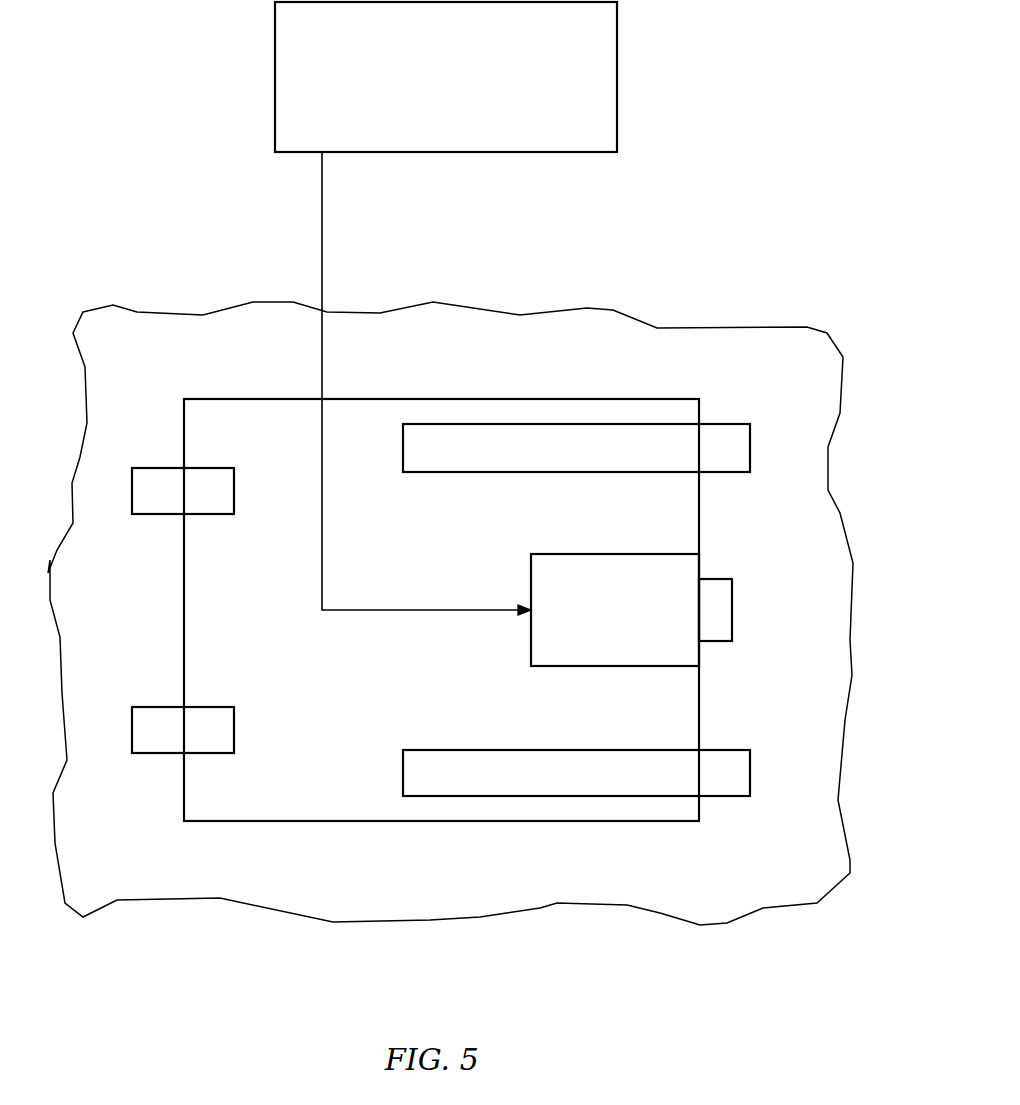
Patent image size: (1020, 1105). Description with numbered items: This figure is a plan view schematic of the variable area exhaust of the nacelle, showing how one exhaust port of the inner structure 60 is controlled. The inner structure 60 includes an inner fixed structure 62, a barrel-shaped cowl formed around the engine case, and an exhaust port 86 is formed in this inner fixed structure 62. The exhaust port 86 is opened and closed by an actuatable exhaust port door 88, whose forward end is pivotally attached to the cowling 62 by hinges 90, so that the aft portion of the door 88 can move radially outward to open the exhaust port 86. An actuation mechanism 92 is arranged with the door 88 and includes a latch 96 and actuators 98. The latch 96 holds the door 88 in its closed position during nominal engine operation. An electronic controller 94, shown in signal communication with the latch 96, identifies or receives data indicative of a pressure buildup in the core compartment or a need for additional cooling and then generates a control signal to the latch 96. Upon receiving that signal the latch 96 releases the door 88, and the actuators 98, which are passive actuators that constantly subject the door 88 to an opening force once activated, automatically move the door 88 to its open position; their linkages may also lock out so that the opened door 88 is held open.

The inner structure 60 is at (734, 285).
The inner fixed structure 62 is at (821, 368).
The exhaust port 86 is at (400, 398).
The exhaust port door 88 is at (254, 416).
The hinge 90 is at (148, 516).
The actuation mechanism 92 is at (768, 524).
The electronic controller 94 is at (617, 58).
The latch 96 is at (700, 643).
The actuator 98 is at (732, 424).